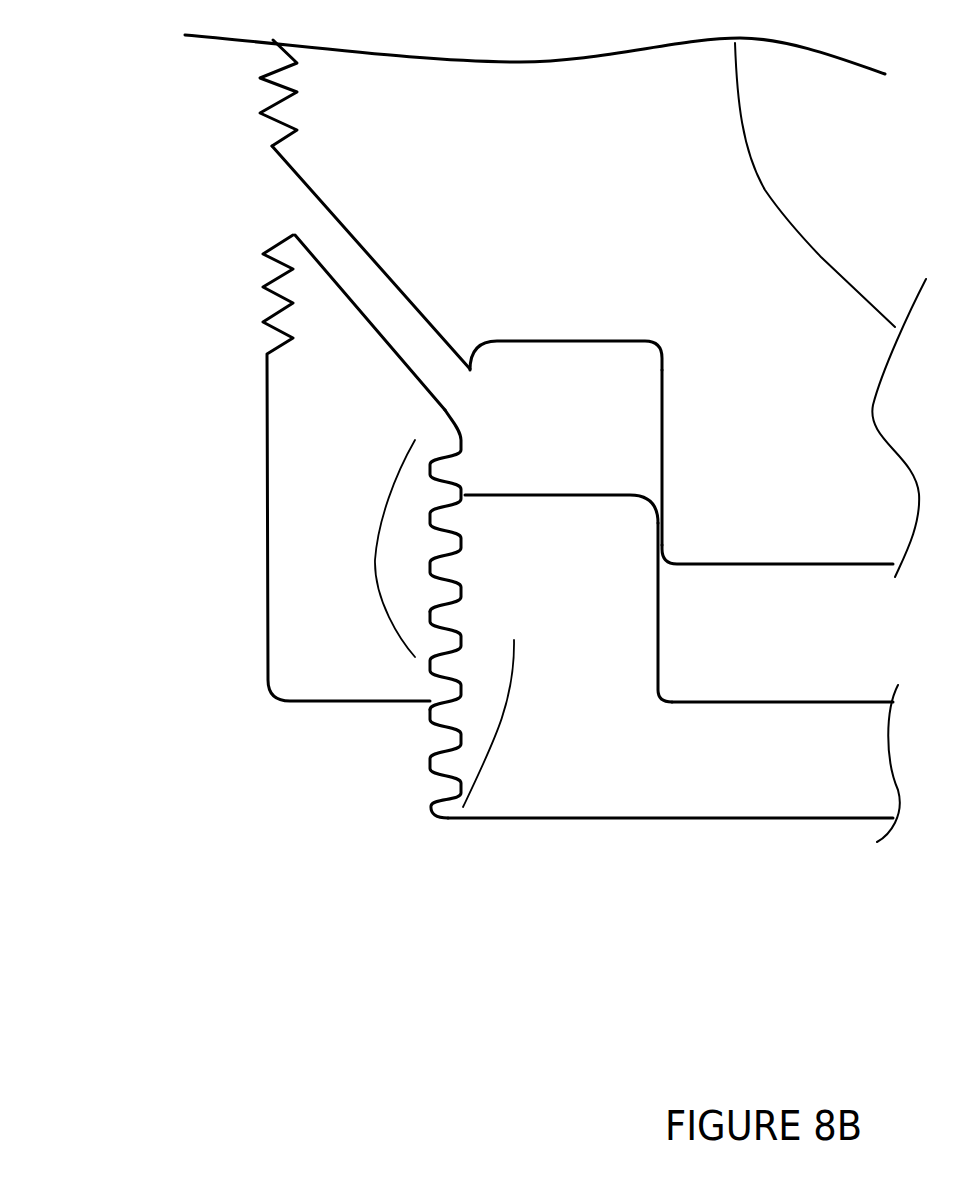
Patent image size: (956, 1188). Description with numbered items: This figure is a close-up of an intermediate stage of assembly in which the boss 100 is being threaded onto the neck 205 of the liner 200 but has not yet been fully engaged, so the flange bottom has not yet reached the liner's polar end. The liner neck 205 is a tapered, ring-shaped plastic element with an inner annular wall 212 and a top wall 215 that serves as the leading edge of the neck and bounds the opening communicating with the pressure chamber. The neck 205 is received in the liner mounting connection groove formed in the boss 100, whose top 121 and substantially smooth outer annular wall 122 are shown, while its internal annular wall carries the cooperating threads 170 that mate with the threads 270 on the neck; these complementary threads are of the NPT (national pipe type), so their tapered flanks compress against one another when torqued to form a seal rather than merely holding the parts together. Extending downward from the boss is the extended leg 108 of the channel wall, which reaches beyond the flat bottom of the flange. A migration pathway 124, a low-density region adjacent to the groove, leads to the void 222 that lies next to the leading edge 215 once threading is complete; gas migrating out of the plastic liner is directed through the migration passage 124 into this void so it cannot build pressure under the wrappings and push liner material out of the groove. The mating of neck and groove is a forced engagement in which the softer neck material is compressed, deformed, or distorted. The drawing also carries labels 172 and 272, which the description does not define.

The boss 100 is at (656, 171).
The extended leg 108 is at (219, 661).
The top of LMC groove 121 is at (625, 332).
The outer annular wall 122 is at (670, 453).
The migration pathway 124 is at (322, 244).
The cooperating threads 170 is at (374, 538).
The teeth 172 is at (459, 479).
The liner 200 is at (778, 780).
The liner neck 205 is at (598, 561).
The inner ring wall 212 is at (331, 792).
The top wall 215 is at (580, 488).
The void 222 is at (370, 322).
The neck threads 270 is at (479, 532).
The latch teeth 272 is at (419, 785).